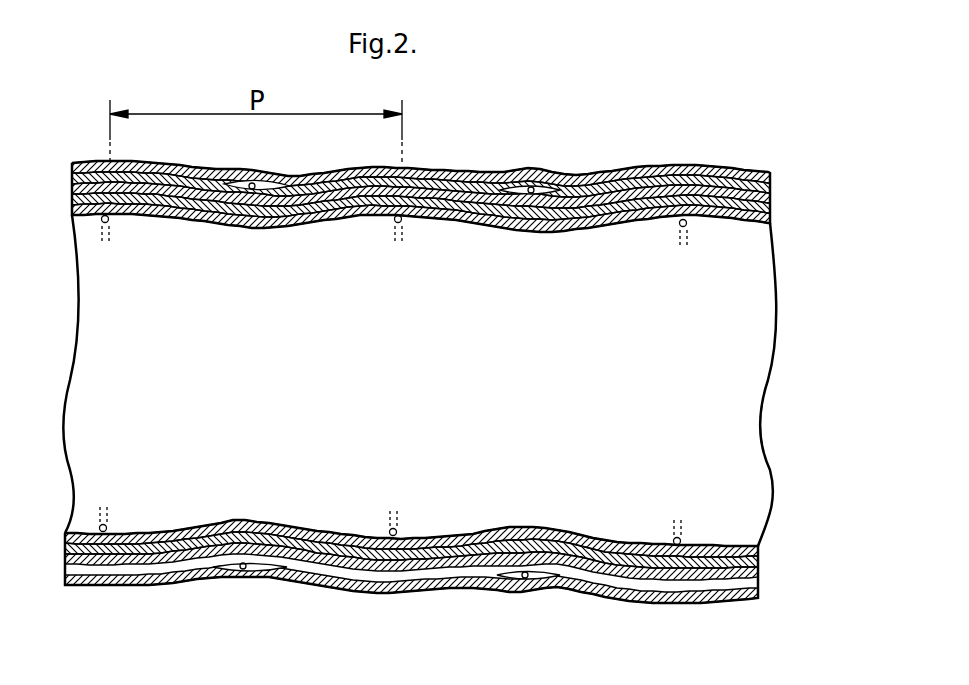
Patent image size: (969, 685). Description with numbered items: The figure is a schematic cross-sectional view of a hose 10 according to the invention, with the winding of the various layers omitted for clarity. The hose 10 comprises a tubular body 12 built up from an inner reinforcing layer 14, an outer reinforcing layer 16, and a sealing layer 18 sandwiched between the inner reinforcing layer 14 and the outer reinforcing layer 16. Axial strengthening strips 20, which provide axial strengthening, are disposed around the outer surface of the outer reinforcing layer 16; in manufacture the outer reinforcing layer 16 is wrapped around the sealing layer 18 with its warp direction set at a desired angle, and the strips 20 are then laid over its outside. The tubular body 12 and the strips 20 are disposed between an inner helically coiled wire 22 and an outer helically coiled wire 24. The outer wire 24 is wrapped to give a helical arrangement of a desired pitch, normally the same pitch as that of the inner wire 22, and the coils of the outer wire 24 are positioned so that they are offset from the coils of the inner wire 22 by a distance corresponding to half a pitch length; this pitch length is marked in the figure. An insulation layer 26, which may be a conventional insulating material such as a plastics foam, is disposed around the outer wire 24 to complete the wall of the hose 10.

The hose 10 is at (801, 158).
The tubular body 12 is at (444, 388).
The inner reinforcing layer 14 is at (137, 216).
The outer reinforcing layer 16 is at (517, 204).
The sealing layer 18 is at (327, 208).
The axial strengthening strips 20 is at (621, 176).
The inner helically coiled wire 22 is at (101, 221).
The outer helically coiled wire 24 is at (257, 184).
The insulation layer 26 is at (197, 168).